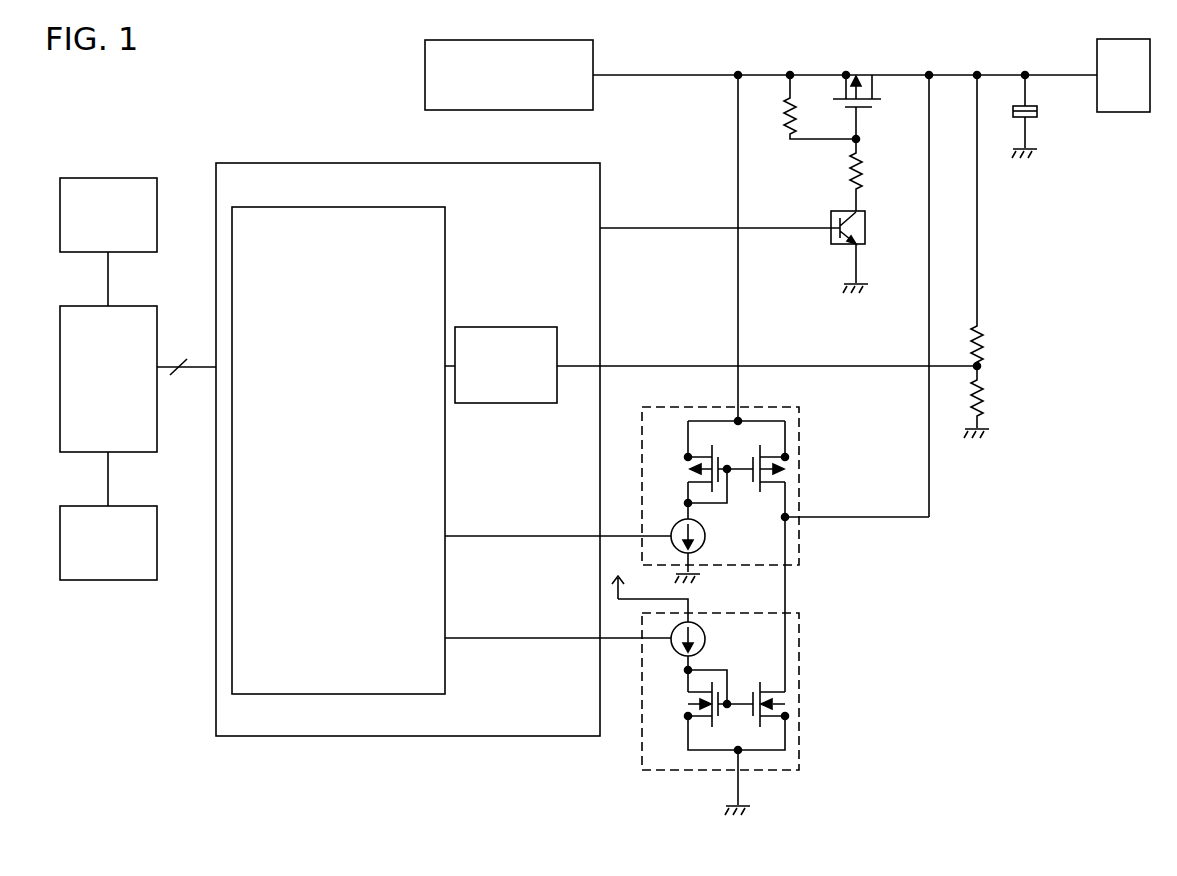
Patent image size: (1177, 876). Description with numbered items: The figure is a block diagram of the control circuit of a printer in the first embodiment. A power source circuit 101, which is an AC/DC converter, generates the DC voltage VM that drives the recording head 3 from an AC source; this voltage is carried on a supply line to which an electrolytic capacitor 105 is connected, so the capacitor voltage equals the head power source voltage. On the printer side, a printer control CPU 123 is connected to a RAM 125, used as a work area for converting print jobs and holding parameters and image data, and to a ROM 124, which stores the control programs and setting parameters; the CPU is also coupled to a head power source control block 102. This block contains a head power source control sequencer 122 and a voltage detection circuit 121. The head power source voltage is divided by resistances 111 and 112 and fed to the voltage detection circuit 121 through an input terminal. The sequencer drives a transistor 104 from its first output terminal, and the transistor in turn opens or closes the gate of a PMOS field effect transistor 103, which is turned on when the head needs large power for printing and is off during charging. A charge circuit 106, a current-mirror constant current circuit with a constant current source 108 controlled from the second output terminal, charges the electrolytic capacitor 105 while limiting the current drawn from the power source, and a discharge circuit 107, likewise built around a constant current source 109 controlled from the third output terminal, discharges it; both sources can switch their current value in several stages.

The recording head 3 is at (1130, 39).
The power source circuit 101 is at (568, 29).
The head power source control block 102 is at (550, 152).
The field effect transistor (FET) 103 is at (862, 71).
The transistor 104 is at (866, 222).
The electrolytic capacitor 105 is at (1040, 114).
The charge circuit 106 is at (746, 549).
The discharge circuit 107 is at (746, 713).
The constant current source 108 is at (708, 534).
The constant current source 109 is at (708, 637).
The resistance 111 is at (983, 337).
The resistance 112 is at (983, 391).
The voltage detection circuit 121 is at (511, 327).
The head power source control sequencer 122 is at (422, 694).
The printer control CPU 123 is at (157, 294).
The ROM 124 is at (157, 494).
The RAM 125 is at (157, 166).